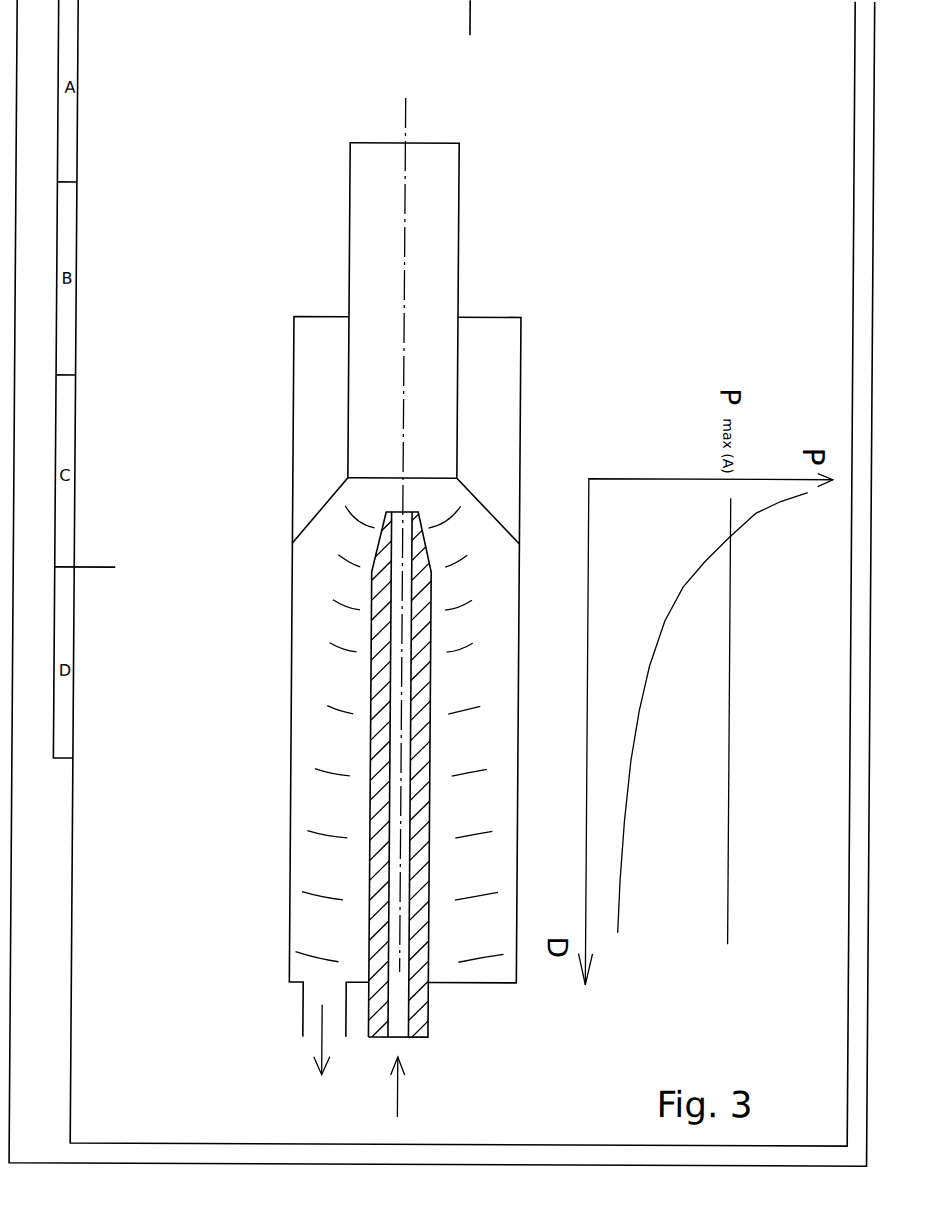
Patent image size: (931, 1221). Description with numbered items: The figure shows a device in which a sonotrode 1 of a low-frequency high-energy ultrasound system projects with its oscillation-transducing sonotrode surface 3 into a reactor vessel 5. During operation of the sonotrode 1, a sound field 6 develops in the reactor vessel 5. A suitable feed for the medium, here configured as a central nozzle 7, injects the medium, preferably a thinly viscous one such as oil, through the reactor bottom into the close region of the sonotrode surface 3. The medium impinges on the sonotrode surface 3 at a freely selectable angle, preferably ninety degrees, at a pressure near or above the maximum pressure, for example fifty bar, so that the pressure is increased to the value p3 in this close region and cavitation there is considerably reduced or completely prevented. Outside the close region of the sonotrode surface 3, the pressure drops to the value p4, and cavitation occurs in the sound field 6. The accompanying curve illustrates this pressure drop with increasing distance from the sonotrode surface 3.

The sonotrode 1 is at (457, 281).
The reactor vessel 5 is at (291, 414).
The sonotrode surface 3 is at (386, 478).
The pressure p3 is at (358, 496).
The sound field 6 is at (324, 704).
The pressure p4 is at (294, 920).
The central nozzle 7 is at (424, 782).